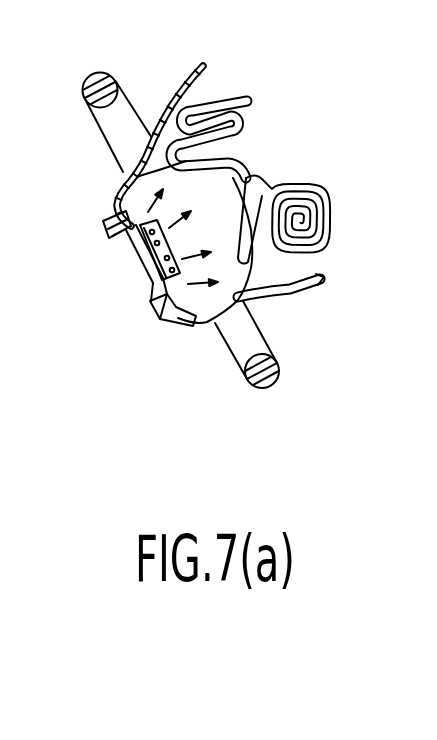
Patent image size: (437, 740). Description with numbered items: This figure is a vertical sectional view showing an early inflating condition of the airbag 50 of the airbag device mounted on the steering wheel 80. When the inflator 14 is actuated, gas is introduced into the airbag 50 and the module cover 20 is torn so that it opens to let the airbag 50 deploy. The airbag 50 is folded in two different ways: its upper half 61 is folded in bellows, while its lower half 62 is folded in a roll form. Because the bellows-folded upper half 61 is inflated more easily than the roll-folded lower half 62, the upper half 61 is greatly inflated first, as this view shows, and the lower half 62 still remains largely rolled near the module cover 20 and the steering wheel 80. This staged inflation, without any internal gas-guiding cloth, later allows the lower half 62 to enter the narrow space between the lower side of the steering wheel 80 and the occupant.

The inflator 14 is at (137, 280).
The module cover 20 is at (306, 296).
The airbag 50 is at (272, 180).
The upper half 61 is at (248, 100).
The lower half 62 is at (320, 183).
The steering wheel 80 is at (268, 340).